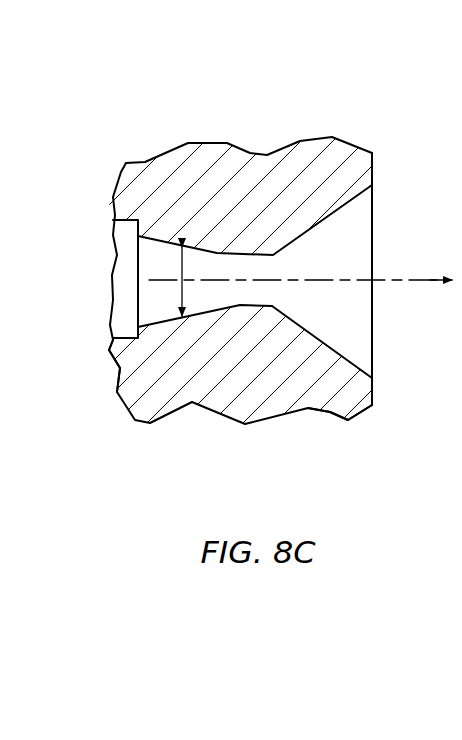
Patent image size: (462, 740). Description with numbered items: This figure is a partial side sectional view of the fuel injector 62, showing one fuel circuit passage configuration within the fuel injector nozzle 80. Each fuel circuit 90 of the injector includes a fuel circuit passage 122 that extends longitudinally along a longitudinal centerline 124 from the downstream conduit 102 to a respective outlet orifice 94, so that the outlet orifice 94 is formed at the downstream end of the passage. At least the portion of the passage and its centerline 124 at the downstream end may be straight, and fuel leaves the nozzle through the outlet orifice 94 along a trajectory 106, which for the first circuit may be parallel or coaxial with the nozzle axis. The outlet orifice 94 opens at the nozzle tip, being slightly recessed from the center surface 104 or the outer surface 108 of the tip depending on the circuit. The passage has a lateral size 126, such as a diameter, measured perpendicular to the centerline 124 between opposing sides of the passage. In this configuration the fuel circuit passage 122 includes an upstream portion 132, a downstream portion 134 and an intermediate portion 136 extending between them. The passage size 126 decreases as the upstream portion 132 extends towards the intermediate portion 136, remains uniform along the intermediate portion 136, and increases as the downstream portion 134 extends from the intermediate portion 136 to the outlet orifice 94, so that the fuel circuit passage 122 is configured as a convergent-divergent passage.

The fuel injector 62 is at (267, 229).
The fuel injector nozzle 80 is at (349, 106).
The fuel circuit 90 is at (100, 323).
The outlet orifice 94 is at (372, 216).
The downstream conduit 102 is at (112, 248).
The center surface 104 is at (380, 424).
The outer surface 108 is at (372, 387).
The trajectory 106 is at (398, 283).
The fuel circuit passage 122 is at (311, 224).
The longitudinal centerline 124 is at (341, 279).
The lateral size 126 is at (184, 289).
The upstream portion 132 is at (154, 328).
The downstream portion 134 is at (338, 354).
The intermediate portion 136 is at (258, 309).